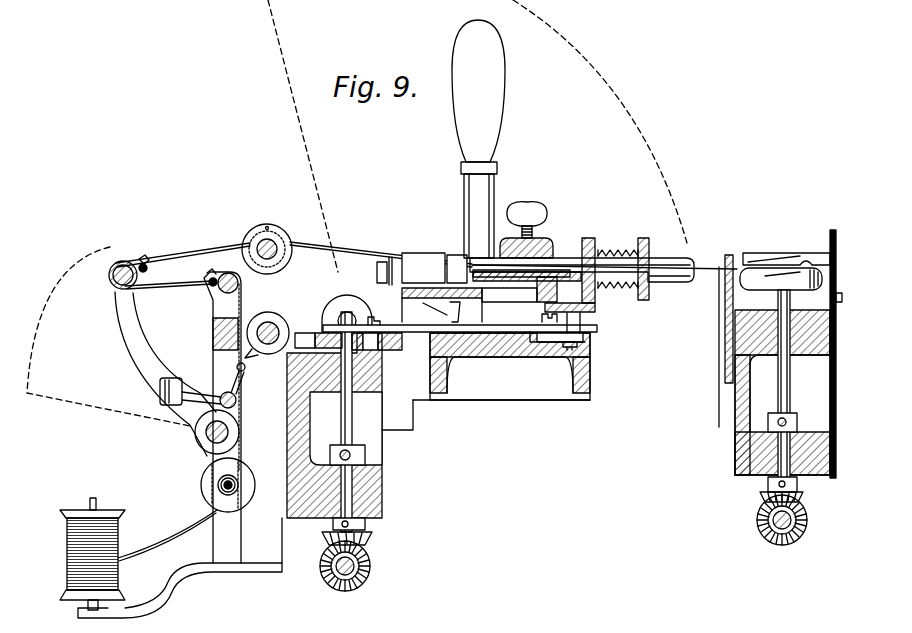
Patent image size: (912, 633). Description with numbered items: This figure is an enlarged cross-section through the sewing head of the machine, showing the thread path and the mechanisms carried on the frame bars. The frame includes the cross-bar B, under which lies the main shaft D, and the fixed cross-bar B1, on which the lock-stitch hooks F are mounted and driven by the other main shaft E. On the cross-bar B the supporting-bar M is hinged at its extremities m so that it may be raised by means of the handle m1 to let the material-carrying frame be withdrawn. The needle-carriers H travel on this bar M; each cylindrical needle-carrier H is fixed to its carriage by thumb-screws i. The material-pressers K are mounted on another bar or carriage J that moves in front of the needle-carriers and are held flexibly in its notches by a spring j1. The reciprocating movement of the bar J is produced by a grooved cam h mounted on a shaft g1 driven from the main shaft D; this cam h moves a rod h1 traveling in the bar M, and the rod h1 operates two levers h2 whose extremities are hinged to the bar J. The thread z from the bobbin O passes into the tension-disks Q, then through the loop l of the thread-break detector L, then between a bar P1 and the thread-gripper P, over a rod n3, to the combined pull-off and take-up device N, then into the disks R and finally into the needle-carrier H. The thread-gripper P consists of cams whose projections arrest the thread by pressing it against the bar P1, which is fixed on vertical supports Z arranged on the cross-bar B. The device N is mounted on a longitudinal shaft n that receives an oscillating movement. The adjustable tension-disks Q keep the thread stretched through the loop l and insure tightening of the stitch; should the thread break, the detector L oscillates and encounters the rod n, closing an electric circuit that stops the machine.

The combined pull-off and take-up device N is at (111, 285).
The rod n3 is at (223, 264).
The disks R is at (267, 238).
The thread z is at (182, 285).
The vertical supports Z is at (180, 445).
The bar P1 is at (212, 333).
The thread-gripper P is at (266, 320).
The loop l is at (236, 367).
The thread-break detector L is at (171, 384).
The longitudinal shaft n is at (214, 432).
The tension-disks Q is at (240, 502).
The bobbin O is at (118, 531).
The cross-bar B is at (350, 425).
The shaft g1 is at (367, 444).
The main shaft D is at (371, 568).
The extremities m is at (345, 312).
The grooved cam h is at (318, 321).
The rod h1 is at (393, 327).
The levers h2 is at (583, 342).
The supporting-bar M is at (501, 366).
The needle-carrier H is at (577, 258).
The thumb-screws i is at (533, 203).
The spring j1 is at (630, 252).
The material-pressers K is at (680, 260).
The bar or carriage J is at (597, 307).
The handle m1 is at (483, 146).
The lock-stitch hooks F is at (786, 245).
The cross-bar B1 is at (748, 393).
The main shaft E is at (770, 521).